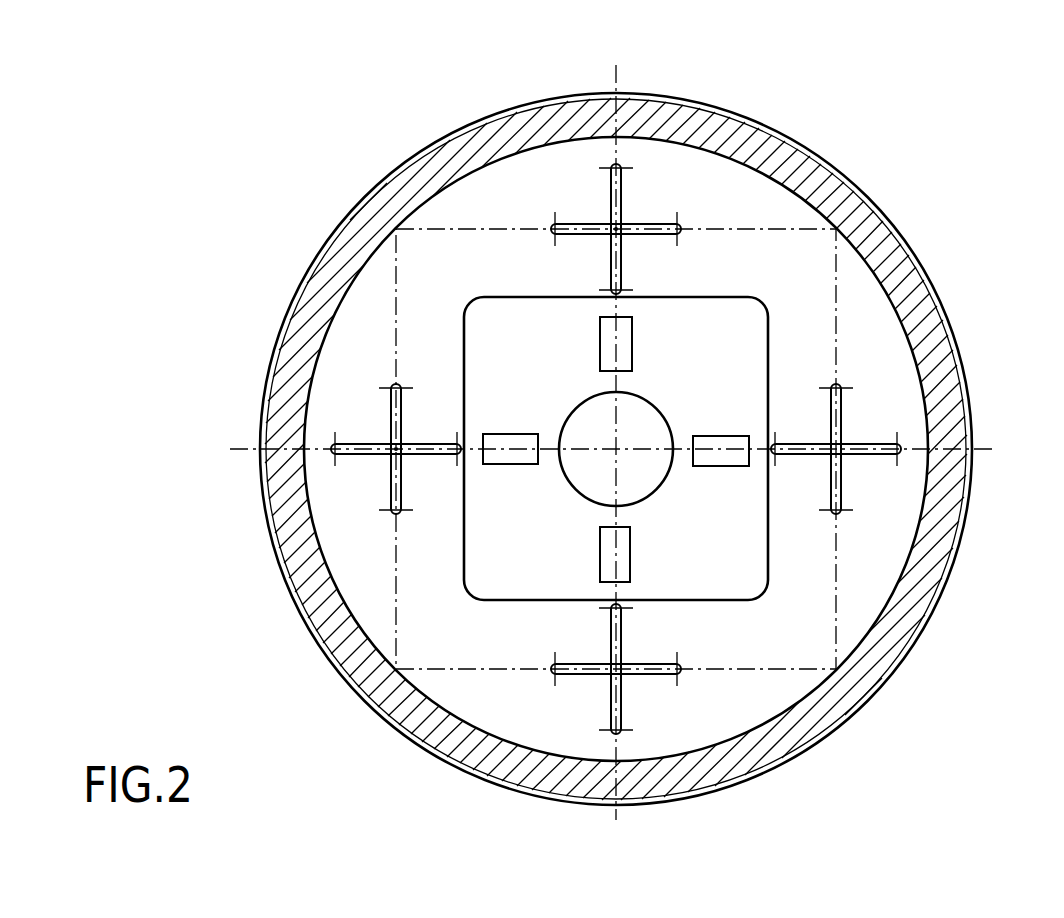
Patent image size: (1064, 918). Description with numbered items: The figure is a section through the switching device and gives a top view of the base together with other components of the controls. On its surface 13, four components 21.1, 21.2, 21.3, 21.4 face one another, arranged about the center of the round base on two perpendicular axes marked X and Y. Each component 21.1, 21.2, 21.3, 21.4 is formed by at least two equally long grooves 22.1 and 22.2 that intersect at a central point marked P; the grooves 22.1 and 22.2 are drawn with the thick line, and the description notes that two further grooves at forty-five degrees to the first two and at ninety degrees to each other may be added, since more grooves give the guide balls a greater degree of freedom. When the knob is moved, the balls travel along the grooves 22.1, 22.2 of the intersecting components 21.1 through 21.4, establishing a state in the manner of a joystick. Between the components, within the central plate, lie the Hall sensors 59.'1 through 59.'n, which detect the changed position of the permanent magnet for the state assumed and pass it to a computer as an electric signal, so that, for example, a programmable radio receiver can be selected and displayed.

The surface 13 is at (779, 206).
The component 21.1 is at (861, 415).
The component 21.2 is at (541, 744).
The component 21.3 is at (362, 402).
The component 21.4 is at (577, 191).
The groove 22.1 is at (610, 708).
The groove 22.2 is at (653, 672).
The Hall sensor 59.'1 is at (676, 198).
The Hall sensor 59.'n is at (355, 541).
The pivot point P is at (616, 229).
The X axis X is at (978, 453).
The Y axis Y is at (616, 87).